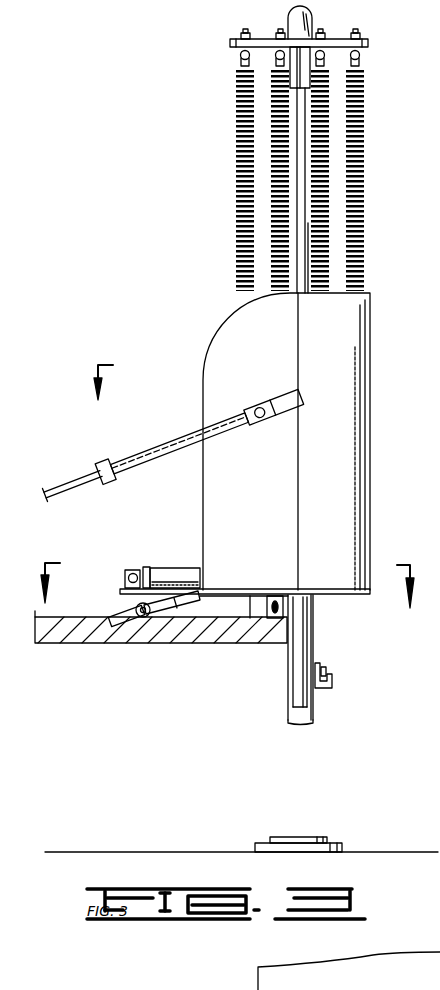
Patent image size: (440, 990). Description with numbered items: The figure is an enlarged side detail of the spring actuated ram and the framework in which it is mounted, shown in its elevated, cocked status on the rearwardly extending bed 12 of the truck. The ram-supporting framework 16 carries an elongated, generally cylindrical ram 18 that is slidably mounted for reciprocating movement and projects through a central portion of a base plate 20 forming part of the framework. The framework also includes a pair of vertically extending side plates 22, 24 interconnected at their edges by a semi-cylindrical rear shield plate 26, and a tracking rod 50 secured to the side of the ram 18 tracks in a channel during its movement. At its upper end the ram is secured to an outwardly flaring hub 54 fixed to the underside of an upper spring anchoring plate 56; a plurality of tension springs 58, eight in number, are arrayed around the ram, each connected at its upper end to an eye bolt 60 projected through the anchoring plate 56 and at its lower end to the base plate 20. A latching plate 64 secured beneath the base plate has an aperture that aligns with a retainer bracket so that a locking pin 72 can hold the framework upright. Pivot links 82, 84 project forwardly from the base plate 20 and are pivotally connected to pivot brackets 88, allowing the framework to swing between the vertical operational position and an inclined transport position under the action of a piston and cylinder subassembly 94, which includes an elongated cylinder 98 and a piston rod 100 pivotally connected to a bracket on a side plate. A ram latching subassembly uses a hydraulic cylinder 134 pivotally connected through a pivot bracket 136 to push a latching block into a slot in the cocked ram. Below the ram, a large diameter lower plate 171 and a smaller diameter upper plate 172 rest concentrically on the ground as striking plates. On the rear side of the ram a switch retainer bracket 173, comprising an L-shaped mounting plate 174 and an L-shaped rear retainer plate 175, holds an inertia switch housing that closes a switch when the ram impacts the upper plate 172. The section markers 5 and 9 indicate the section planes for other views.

The section line 5 is at (101, 392).
The section line 9 is at (223, 585).
The bed 12 is at (60, 645).
The ram-supporting framework 16 is at (162, 298).
The ram 18 is at (296, 291).
The base plate 20 is at (229, 590).
The side plate 22 is at (275, 361).
The side plate 24 is at (389, 983).
The rear shield plate 26 is at (345, 387).
The tracking rod 50 is at (310, 293).
The hub 54 is at (296, 52).
The upper spring anchoring plate 56 is at (232, 43).
The tension springs 58 is at (243, 130).
The eye bolt 60 is at (360, 57).
The latching plate 64 is at (250, 606).
The locking pin 72 is at (272, 596).
The pivot link 82 is at (165, 610).
The pivot link 84 is at (349, 971).
The pivot bracket 88 is at (128, 617).
The piston and cylinder subassembly 94 is at (145, 447).
The cylinder 98 is at (84, 477).
The piston rod 100 is at (157, 456).
The hydraulic cylinder 134 is at (168, 572).
The pivot bracket 136 is at (131, 569).
The lower plate 171 is at (272, 836).
The upper plate 172 is at (294, 836).
The switch retainer bracket 173 is at (340, 692).
The L-shaped mounting plate 174 is at (318, 662).
The L-shaped rear retainer plate 175 is at (328, 676).